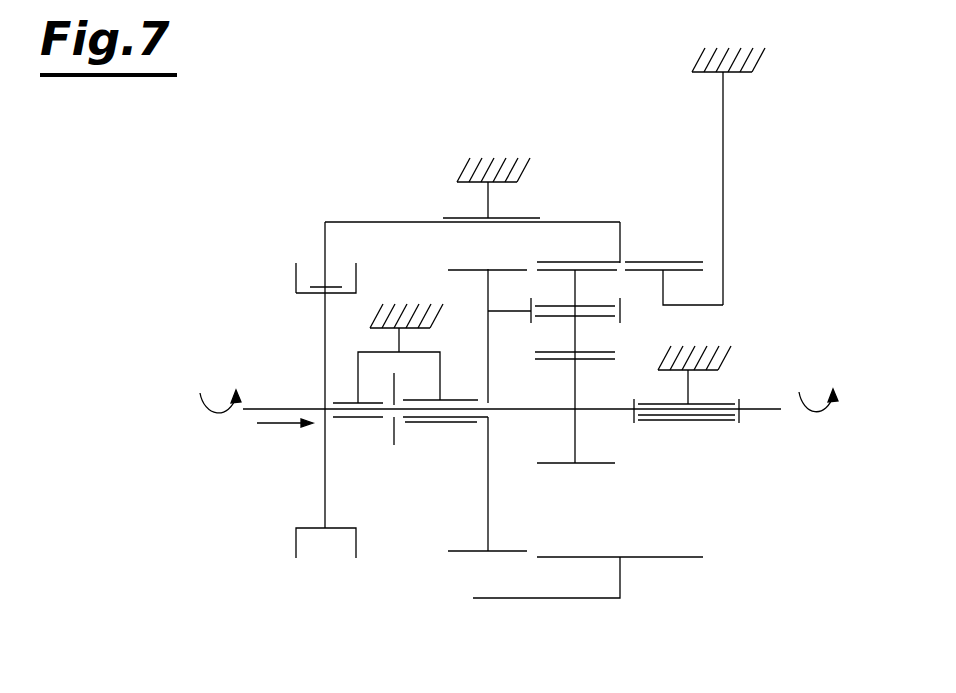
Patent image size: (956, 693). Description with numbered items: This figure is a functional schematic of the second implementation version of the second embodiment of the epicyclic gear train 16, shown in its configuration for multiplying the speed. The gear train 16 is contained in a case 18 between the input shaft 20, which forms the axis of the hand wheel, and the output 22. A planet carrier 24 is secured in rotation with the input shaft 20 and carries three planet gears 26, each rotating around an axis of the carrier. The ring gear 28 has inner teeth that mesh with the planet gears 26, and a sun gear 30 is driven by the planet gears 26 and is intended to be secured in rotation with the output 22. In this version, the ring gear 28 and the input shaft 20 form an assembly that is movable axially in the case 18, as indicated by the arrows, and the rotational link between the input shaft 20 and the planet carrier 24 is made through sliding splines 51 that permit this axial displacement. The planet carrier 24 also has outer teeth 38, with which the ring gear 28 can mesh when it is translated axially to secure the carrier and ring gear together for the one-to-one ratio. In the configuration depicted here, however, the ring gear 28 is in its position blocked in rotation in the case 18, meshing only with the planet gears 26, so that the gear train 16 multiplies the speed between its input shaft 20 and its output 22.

The epicyclic gear train 16 is at (473, 128).
The case 18 is at (490, 197).
The input shaft 20 is at (288, 407).
The output 22 is at (765, 408).
The planet carrier 24 is at (487, 460).
The planet gears 26 is at (573, 334).
The ring gear 28 is at (662, 262).
The sun gear 30 is at (598, 465).
The outer teeth 38 is at (461, 549).
The sliding splines 51 is at (385, 425).